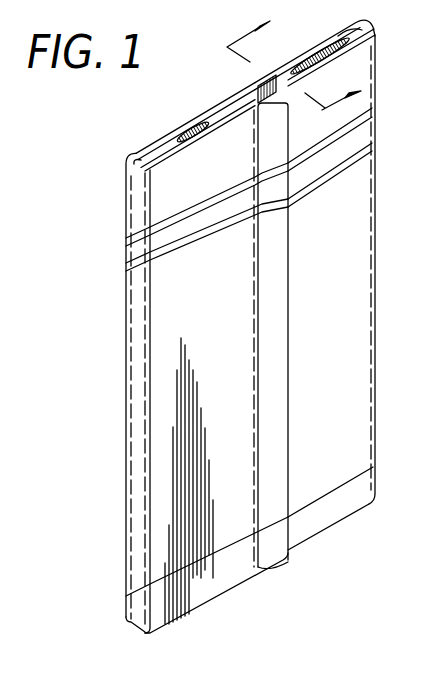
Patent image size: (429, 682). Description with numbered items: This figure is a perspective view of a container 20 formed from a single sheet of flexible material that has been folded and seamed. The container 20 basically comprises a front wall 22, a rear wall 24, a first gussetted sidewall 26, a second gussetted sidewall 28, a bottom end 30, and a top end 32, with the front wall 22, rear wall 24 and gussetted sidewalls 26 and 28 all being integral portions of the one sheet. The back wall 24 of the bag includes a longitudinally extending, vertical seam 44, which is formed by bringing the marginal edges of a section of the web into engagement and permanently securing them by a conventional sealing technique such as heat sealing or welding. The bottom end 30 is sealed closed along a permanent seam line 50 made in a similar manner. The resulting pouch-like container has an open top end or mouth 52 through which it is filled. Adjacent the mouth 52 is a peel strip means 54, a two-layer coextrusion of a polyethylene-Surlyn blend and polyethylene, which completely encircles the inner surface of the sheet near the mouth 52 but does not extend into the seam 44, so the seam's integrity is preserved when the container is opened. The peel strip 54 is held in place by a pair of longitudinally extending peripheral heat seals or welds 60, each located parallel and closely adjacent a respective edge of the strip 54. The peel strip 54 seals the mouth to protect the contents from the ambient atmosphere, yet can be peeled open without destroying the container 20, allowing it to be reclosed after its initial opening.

The container 20 is at (112, 362).
The front wall 22 is at (301, 50).
The rear wall 24 is at (365, 223).
The first gussetted sidewall 26 is at (132, 316).
The second gussetted sidewall 28 is at (380, 160).
The bottom end 30 is at (240, 583).
The top end 32 is at (174, 134).
The seam 44 is at (272, 340).
The seam line 50 is at (322, 500).
The mouth 52 is at (237, 103).
The peel strip means 54 is at (153, 257).
The heat seals 60 is at (213, 207).